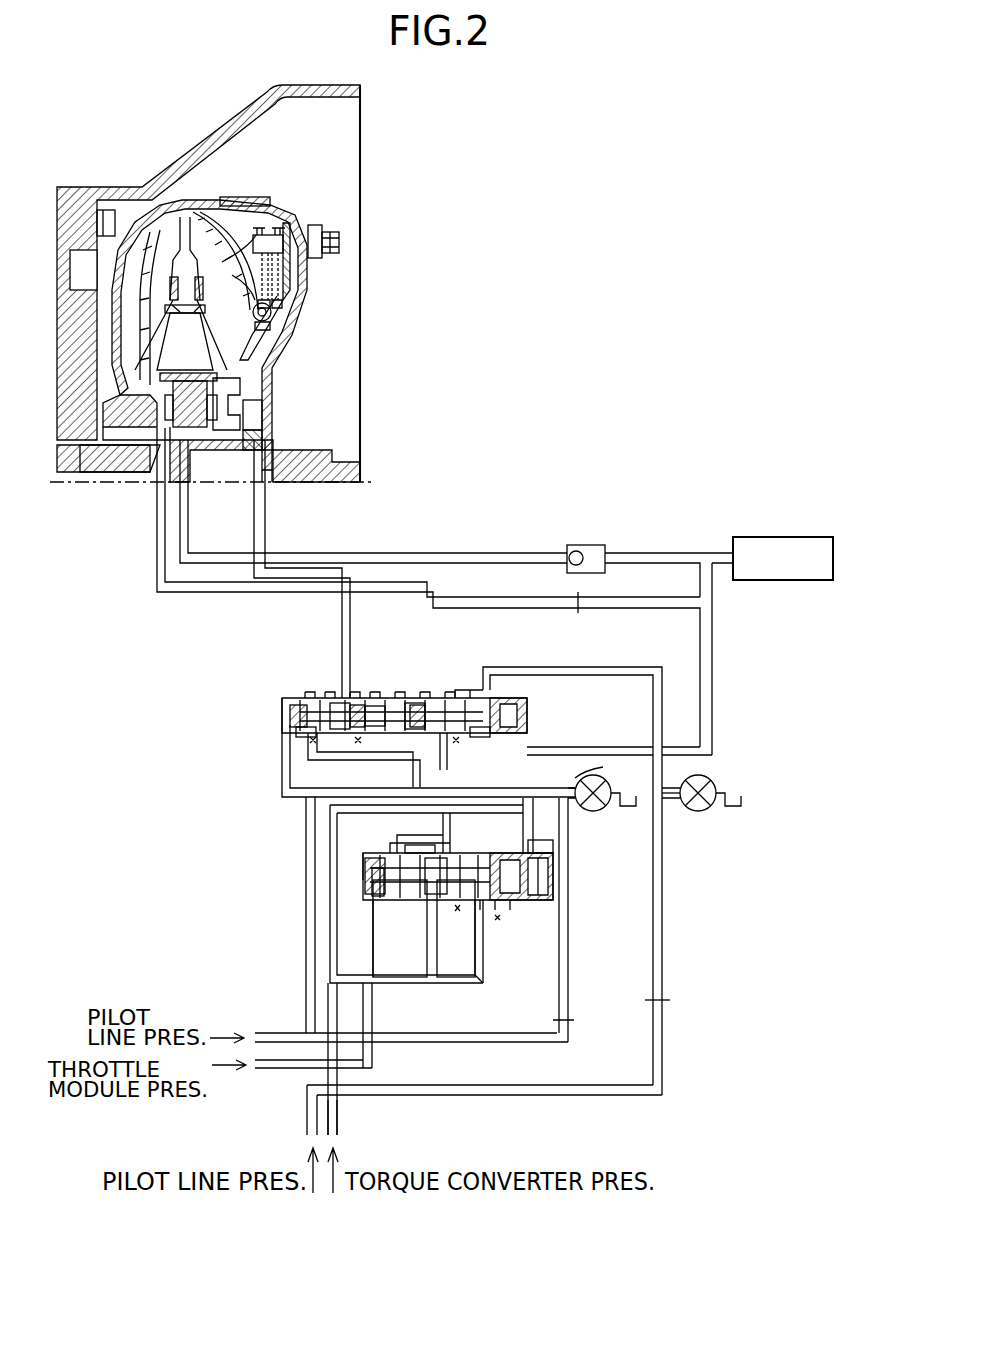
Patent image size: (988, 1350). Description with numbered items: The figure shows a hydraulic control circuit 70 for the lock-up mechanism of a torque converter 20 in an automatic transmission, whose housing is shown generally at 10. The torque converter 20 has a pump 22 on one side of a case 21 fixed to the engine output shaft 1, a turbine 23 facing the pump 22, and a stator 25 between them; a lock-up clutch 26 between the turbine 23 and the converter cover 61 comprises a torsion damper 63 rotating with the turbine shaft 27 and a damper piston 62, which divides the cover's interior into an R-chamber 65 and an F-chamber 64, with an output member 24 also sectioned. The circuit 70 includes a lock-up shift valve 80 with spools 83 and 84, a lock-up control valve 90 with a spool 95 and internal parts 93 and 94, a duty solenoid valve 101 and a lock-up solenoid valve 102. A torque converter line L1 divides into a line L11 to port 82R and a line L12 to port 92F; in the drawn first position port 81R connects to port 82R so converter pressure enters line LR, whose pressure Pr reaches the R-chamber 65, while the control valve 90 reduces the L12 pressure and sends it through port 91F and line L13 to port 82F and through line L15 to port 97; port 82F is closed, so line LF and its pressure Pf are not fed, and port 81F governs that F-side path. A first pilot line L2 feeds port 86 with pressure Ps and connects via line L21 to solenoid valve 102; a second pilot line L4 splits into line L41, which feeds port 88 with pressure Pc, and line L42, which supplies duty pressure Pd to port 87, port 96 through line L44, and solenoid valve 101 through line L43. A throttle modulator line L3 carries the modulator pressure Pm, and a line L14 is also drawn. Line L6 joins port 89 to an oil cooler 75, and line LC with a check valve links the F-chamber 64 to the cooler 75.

The transmission housing 10 is at (75, 155).
The torque converter 20 is at (305, 195).
The case 21 is at (180, 205).
The pump 22 is at (155, 230).
The turbine 23 is at (265, 242).
The output shaft 24 is at (285, 392).
The stator 25 is at (178, 335).
The lock-up clutch 26 is at (283, 268).
The turbine shaft 27 is at (258, 440).
The engine output shaft 1 is at (330, 457).
The converter cover 61 is at (338, 243).
The damper piston 62 is at (318, 226).
The torsion damper 63 is at (272, 316).
The F-chamber 64 is at (290, 295).
The R-chamber 65 is at (242, 225).
The hydraulic circuit 70 is at (535, 520).
The oil cooler 75 is at (768, 537).
The lock-up shift valve 80 is at (280, 685).
The port 81F is at (345, 700).
The port 81R is at (425, 700).
The port 82F is at (310, 735).
The port 82R is at (524, 735).
The spool 83 is at (380, 700).
The spool 84 is at (500, 718).
The port 86 is at (488, 700).
The port 87 is at (282, 725).
The port 88 is at (340, 750).
The port 89 is at (330, 770).
The lock-up control valve 90 is at (358, 885).
The port 91F is at (440, 868).
The port 92F is at (400, 928).
The spool 93 is at (360, 905).
The port 94 is at (365, 866).
The spool 95 is at (515, 900).
The port 96 is at (540, 845).
The port 97 is at (485, 905).
The duty solenoid valve 101 is at (600, 810).
The lock-up solenoid valve 102 is at (720, 788).
The line LR is at (157, 530).
The line pressure Pr is at (160, 565).
The line pressure Pf is at (262, 542).
The line LF is at (262, 487).
The line LC is at (540, 520).
The pilot pressure Ps is at (648, 667).
The duty pressure Pd is at (512, 797).
The pilot pressure Pc is at (308, 935).
The modulator pressure Pm is at (372, 1020).
The torque converter line L1 is at (340, 1085).
The first pilot line L2 is at (337, 1122).
The throttle modulator line L3 is at (278, 1068).
The second pilot line L4 is at (280, 1030).
The line L6 is at (603, 747).
The line L11 is at (373, 945).
The line L12 is at (453, 928).
The line L13 is at (360, 880).
The line L14 is at (390, 850).
The line L15 is at (470, 985).
The line L21 is at (672, 783).
The line L41 is at (306, 963).
The line L42 is at (590, 968).
The line L43 is at (614, 770).
The line L44 is at (523, 813).